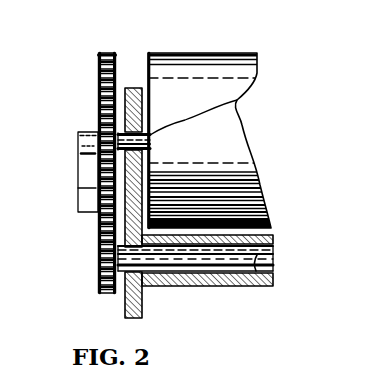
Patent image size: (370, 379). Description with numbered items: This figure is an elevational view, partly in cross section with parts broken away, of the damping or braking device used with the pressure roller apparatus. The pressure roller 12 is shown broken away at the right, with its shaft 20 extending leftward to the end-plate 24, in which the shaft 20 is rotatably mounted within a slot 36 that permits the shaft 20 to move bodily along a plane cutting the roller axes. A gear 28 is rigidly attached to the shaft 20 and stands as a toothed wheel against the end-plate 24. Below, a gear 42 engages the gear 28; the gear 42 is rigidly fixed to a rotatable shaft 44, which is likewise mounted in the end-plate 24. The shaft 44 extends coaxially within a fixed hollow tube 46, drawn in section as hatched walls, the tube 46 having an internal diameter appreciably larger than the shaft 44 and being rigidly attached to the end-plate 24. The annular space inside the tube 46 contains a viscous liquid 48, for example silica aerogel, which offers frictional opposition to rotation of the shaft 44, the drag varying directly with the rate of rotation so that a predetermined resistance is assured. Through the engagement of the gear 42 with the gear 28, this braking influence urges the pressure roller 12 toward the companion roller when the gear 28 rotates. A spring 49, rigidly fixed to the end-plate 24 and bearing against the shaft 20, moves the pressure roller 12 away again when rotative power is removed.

The pressure roller 12 is at (188, 53).
The shaft 20 is at (237, 100).
The end-plate 24 is at (133, 97).
The gear 28 is at (108, 96).
The slot 36 is at (122, 158).
The gear 42 is at (107, 250).
The shaft 44 is at (253, 287).
The hollow tube 46 is at (177, 285).
The viscous liquid 48 is at (208, 285).
The spring 49 is at (86, 187).